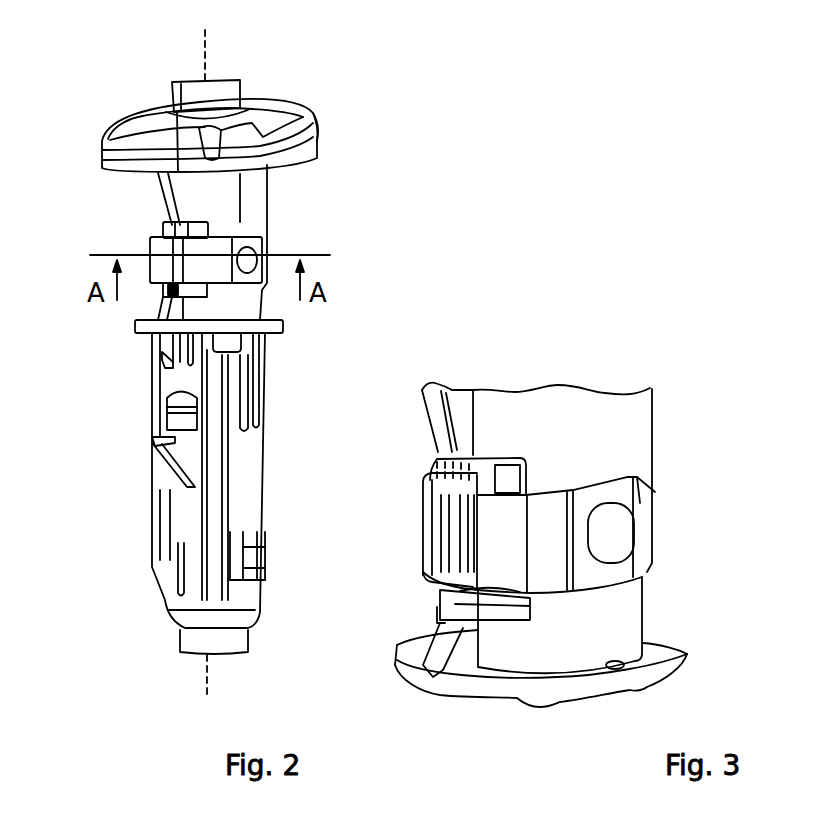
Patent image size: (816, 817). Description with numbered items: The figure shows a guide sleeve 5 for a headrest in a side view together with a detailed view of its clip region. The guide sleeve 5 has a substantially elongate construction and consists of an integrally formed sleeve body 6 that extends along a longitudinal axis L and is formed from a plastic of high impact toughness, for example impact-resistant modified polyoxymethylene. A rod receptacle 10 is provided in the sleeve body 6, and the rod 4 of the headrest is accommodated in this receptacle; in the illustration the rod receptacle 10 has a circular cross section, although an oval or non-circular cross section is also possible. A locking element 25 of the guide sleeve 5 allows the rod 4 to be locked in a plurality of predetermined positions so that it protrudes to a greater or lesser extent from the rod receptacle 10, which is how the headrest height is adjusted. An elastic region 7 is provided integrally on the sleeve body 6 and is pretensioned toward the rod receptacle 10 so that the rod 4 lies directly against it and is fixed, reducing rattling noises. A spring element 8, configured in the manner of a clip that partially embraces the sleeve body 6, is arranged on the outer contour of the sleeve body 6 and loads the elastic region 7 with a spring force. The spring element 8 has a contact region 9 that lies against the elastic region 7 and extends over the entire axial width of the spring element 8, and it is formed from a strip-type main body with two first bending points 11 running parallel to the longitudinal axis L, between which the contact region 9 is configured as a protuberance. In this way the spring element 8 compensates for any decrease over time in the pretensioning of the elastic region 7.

In FIG. 2, the rod 4 is at (180, 95).
In FIG. 2, the guide sleeve 5 is at (290, 218).
In FIG. 2, the sleeve body 6 is at (247, 500).
In FIG. 3, the sleeve body 6 is at (633, 432).
In FIG. 2, the elastic region 7 is at (177, 230).
In FIG. 3, the elastic region 7 is at (477, 477).
In FIG. 2, the spring element 8 is at (167, 247).
In FIG. 3, the spring element 8 is at (420, 535).
In FIG. 3, the contact region 9 is at (467, 569).
In FIG. 2, the rod receptacle 10 is at (252, 88).
In FIG. 3, the first bending points 11 is at (617, 535).
In FIG. 2, the locking element 25 is at (322, 98).
In FIG. 2, the longitudinal axis L is at (214, 48).